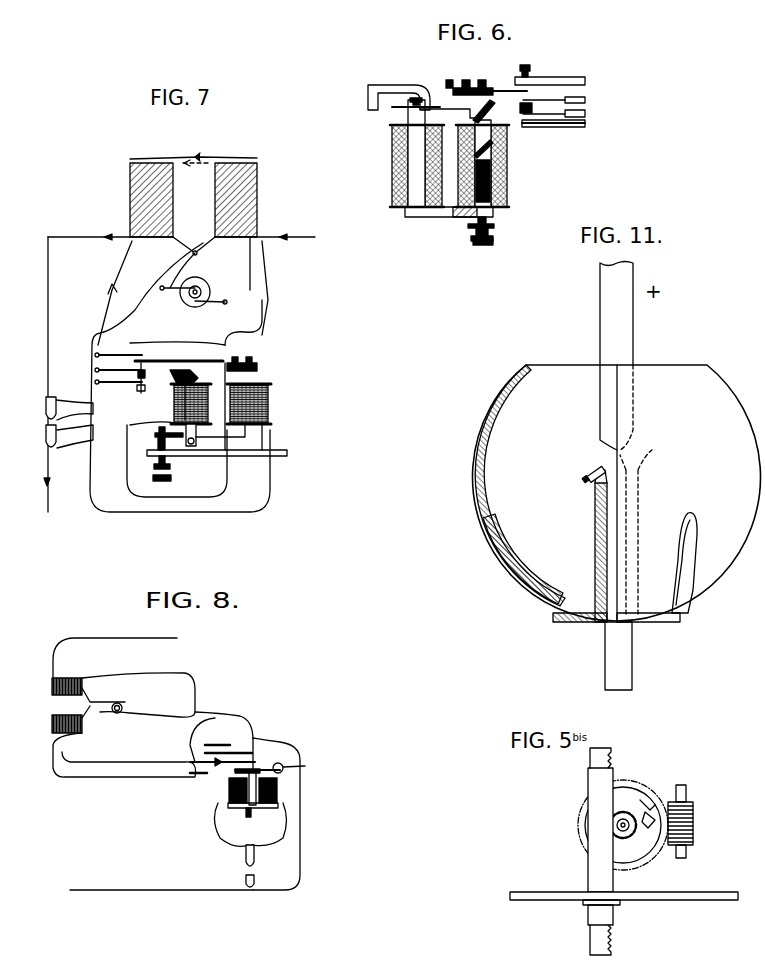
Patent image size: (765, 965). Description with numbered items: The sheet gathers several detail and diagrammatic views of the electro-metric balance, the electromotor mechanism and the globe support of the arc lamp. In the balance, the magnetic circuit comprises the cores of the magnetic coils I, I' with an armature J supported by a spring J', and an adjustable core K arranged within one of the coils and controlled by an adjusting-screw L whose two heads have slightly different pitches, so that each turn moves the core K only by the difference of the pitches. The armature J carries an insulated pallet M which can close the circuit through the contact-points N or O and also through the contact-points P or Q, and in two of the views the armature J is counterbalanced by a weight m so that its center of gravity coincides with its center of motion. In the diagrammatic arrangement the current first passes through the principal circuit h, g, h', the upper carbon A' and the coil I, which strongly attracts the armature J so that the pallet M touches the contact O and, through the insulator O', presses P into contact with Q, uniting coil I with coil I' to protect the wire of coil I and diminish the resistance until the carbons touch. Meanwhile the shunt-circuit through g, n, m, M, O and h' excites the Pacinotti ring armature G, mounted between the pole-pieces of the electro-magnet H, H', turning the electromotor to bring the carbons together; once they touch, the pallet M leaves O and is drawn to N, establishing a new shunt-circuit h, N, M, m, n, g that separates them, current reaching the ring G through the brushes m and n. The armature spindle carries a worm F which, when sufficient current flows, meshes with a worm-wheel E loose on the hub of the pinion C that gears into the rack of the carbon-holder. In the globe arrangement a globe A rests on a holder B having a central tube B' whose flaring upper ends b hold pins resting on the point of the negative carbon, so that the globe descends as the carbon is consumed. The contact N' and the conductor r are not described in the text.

In FIG. 6, the counterbalancing weight / brush m is at (384, 97).
In FIG. 7, the counterbalancing weight / brush m is at (220, 302).
In FIG. 8, the counterbalancing weight / brush m is at (297, 767).
In FIG. 6, the spring J' is at (410, 109).
In FIG. 7, the spring J' is at (246, 366).
In FIG. 8, the spring J' is at (243, 818).
In FIG. 6, the armature J is at (448, 111).
In FIG. 7, the armature J is at (187, 395).
In FIG. 8, the armature J is at (251, 762).
In FIG. 6, the insulated pallet M is at (486, 97).
In FIG. 7, the insulated pallet M is at (179, 366).
In FIG. 8, the insulated pallet M is at (262, 768).
In FIG. 6, the contact-point N is at (558, 77).
In FIG. 7, the contact-point N is at (120, 348).
In FIG. 6, the insulator O' is at (537, 99).
In FIG. 7, the insulator O' is at (150, 377).
In FIG. 6, the contact-point O is at (562, 103).
In FIG. 7, the contact-point O is at (118, 363).
In FIG. 8, the contact-point O is at (215, 747).
In FIG. 6, the contact-point P is at (562, 117).
In FIG. 7, the contact-point P is at (120, 389).
In FIG. 8, the contact-point P is at (232, 752).
In FIG. 11, the contact-point P is at (596, 468).
In FIG. 5bis, the contact-point P is at (624, 885).
In FIG. 6, the contact-point Q is at (553, 131).
In FIG. 6, the magnetic coil I' is at (408, 153).
In FIG. 7, the magnetic coil I' is at (255, 404).
In FIG. 8, the magnetic coil I' is at (228, 790).
In FIG. 6, the magnetic coil I is at (483, 163).
In FIG. 7, the magnetic coil I is at (185, 415).
In FIG. 8, the magnetic coil I is at (273, 790).
In FIG. 6, the adjustable core K is at (483, 156).
In FIG. 6, the adjusting-screw L is at (488, 233).
In FIG. 7, the adjusting-screw L is at (168, 456).
In FIG. 7, the electro-magnet pole-piece H' is at (151, 189).
In FIG. 8, the electro-magnet pole-piece H' is at (56, 724).
In FIG. 7, the electro-magnet pole-piece H is at (236, 189).
In FIG. 8, the electro-magnet pole-piece H is at (56, 686).
In FIG. 7, the principal-circuit conductor h' is at (110, 289).
In FIG. 7, the principal-circuit conductor h is at (265, 284).
In FIG. 7, the principal-circuit conductor g is at (192, 262).
In FIG. 7, the brush n is at (169, 288).
In FIG. 7, the Pacinotti ring armature G is at (186, 298).
In FIG. 7, the upper carbon A' is at (42, 407).
In FIG. 7, the globe A is at (42, 436).
In FIG. 8, the globe A is at (257, 866).
In FIG. 11, the globe A is at (616, 493).
In FIG. 8, the contact spring N' is at (195, 785).
In FIG. 8, the return conductor r is at (311, 857).
In FIG. 11, the central tube B' is at (580, 546).
In FIG. 11, the globe-holder B is at (585, 567).
In FIG. 11, the flaring upper end b is at (578, 479).
In FIG. 5bis, the worm-wheel E is at (623, 813).
In FIG. 5bis, the worm F is at (688, 821).
In FIG. 5bis, the pinion C is at (623, 834).